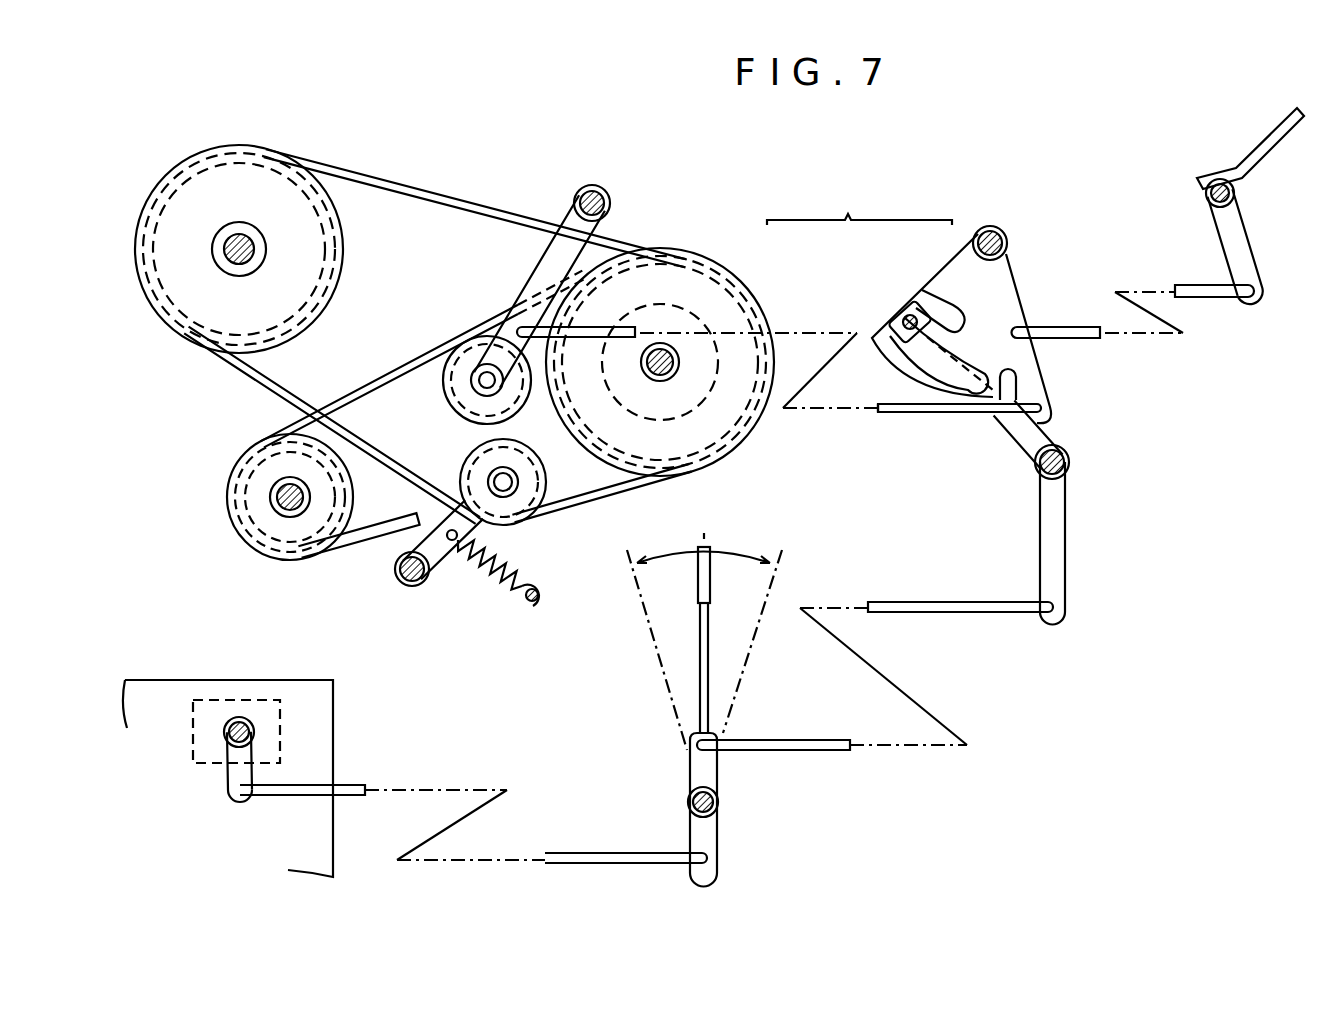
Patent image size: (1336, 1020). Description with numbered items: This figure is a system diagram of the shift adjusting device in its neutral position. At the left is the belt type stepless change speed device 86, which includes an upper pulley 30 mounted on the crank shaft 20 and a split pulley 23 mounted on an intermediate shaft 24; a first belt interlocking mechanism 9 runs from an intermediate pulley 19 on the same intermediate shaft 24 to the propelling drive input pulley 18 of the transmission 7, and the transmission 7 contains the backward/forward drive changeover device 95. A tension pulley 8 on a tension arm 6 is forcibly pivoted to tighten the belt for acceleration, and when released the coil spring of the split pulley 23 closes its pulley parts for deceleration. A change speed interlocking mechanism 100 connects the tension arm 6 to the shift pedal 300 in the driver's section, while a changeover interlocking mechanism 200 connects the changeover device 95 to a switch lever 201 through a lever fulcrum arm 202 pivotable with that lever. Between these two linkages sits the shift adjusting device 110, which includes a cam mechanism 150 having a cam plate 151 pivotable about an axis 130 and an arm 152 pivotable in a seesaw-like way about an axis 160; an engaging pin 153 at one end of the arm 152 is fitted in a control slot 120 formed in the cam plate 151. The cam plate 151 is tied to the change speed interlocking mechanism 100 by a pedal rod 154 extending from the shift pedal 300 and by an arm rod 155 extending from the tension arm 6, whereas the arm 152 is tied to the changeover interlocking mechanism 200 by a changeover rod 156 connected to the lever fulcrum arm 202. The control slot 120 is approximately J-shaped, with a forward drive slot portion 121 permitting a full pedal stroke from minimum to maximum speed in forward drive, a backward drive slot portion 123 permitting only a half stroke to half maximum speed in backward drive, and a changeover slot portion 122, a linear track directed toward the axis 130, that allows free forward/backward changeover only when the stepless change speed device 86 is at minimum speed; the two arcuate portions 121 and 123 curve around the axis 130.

The propelling drive input pulley 18 is at (168, 178).
The first belt interlocking mechanism 9 is at (411, 179).
The tension arm 6 is at (550, 255).
The split pulley 23 is at (697, 311).
The intermediate pulley 19 is at (675, 247).
The intermediate shaft 24 is at (677, 373).
The tension pulley 8 is at (455, 367).
The belt type stepless change speed device 86 is at (286, 514).
The upper pulley 30 is at (232, 526).
The crank shaft 20 is at (292, 505).
The backward/forward drive changeover device 95 is at (213, 698).
The transmission 7 is at (334, 747).
The control slot 120 is at (879, 282).
The forward drive slot portion 121 is at (883, 330).
The changeover slot portion 122 is at (930, 348).
The backward drive slot portion 123 is at (931, 276).
The shift adjusting device 110 is at (1016, 375).
The axis 130 is at (1000, 227).
The change speed interlocking mechanism 100 is at (1036, 435).
The cam mechanism 150 is at (1016, 429).
The cam plate 151 is at (1040, 357).
The arm 152 is at (1023, 440).
The engaging pin 153 is at (897, 262).
The pedal rod 154 is at (1223, 297).
The arm rod 155 is at (893, 413).
The changeover rod 156 is at (998, 613).
The axis 160 is at (1067, 468).
The shift pedal 300 is at (1263, 150).
The changeover interlocking mechanism 200 is at (711, 692).
The switch lever 201 is at (710, 665).
The lever fulcrum arm 202 is at (710, 777).